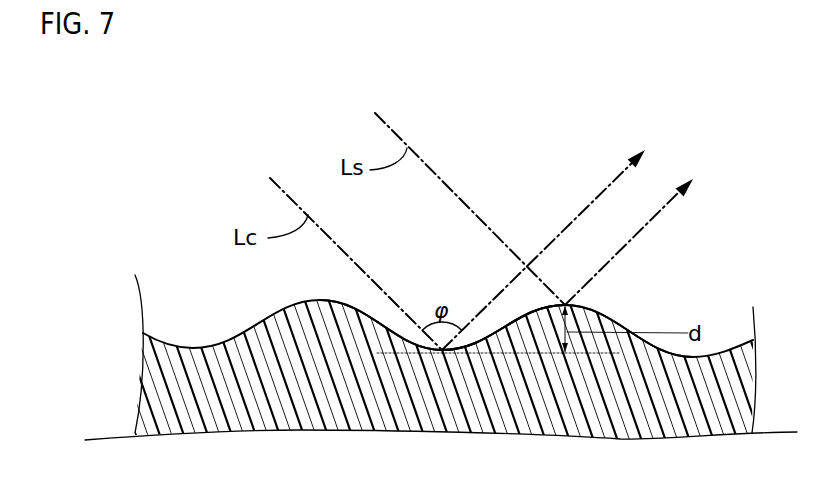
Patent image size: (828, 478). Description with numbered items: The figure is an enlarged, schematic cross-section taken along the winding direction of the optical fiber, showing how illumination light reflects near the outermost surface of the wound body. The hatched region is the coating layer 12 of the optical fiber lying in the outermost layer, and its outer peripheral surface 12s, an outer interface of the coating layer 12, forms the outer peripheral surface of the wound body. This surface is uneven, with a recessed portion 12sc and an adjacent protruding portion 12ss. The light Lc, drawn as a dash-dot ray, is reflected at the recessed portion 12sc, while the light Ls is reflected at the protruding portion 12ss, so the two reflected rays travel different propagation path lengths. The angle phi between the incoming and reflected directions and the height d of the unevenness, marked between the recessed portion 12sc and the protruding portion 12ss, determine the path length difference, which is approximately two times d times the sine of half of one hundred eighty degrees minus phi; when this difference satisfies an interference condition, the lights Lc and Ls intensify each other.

The coating layer 12 is at (153, 394).
The outer peripheral surface 12s is at (188, 347).
The recessed portion 12sc is at (422, 342).
The protruding portion 12ss is at (596, 304).